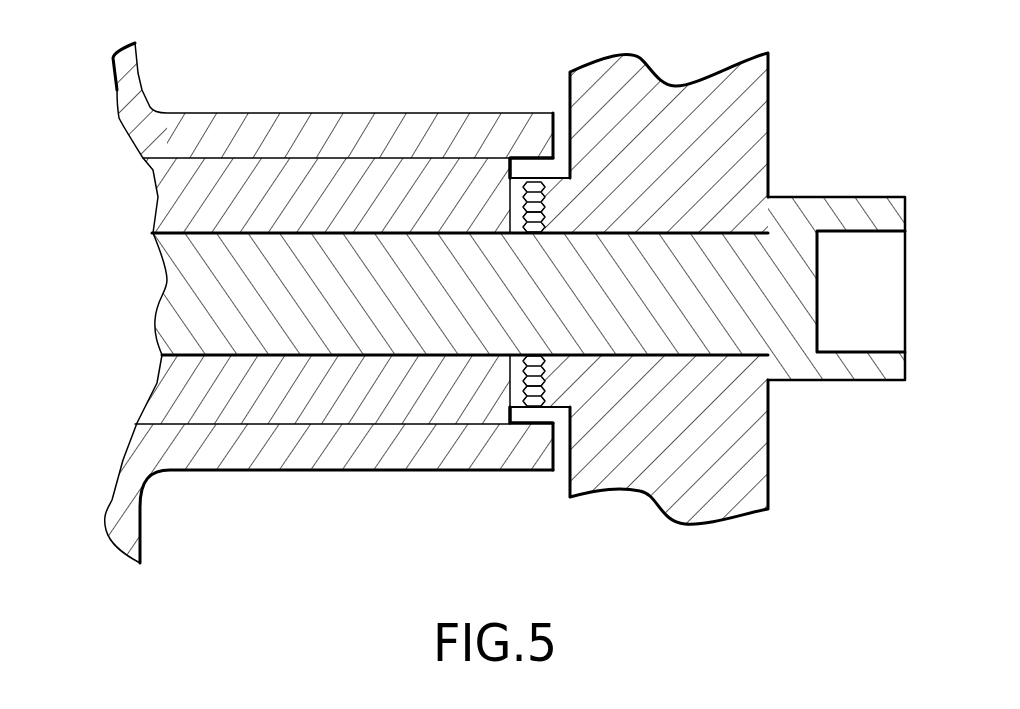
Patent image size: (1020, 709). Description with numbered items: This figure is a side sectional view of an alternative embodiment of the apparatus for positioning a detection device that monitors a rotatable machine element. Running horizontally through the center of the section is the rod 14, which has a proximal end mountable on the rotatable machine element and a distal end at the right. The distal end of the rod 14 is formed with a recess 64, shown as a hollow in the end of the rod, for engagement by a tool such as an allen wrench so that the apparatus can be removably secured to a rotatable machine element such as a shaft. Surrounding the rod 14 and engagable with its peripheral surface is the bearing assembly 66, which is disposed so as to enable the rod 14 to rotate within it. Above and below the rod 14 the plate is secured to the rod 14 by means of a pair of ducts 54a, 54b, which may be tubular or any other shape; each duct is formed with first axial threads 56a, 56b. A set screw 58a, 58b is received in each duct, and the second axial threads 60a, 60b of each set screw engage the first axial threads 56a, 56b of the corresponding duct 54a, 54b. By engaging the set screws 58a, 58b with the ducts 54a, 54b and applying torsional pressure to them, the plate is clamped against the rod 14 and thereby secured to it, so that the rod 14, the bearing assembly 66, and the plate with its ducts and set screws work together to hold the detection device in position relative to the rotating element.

The rod 14 is at (170, 297).
The bearing assembly 66 is at (308, 180).
The duct 54a is at (518, 173).
The duct 54b is at (525, 408).
The set screw 58a is at (535, 175).
The set screw 58b is at (530, 408).
The second axial threads 60a is at (543, 196).
The second axial threads 60b is at (543, 366).
The first axial threads 56a is at (543, 218).
The first axial threads 56b is at (543, 388).
The recess 64 is at (883, 313).